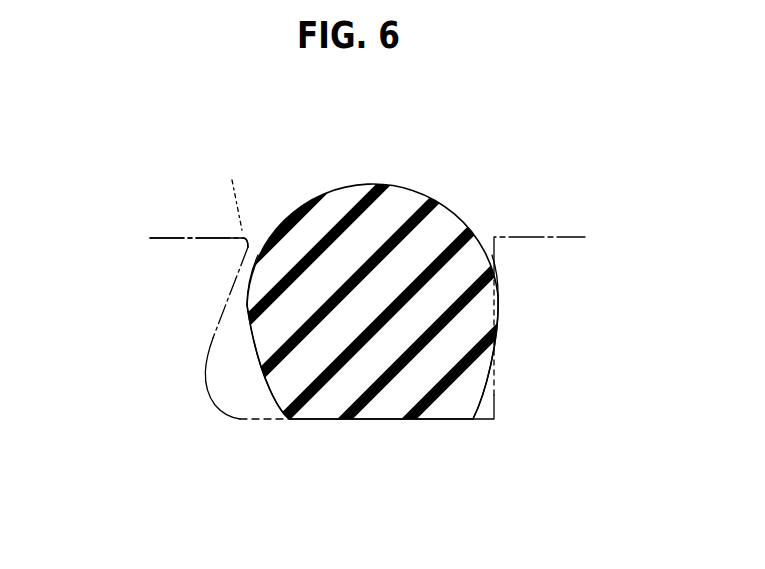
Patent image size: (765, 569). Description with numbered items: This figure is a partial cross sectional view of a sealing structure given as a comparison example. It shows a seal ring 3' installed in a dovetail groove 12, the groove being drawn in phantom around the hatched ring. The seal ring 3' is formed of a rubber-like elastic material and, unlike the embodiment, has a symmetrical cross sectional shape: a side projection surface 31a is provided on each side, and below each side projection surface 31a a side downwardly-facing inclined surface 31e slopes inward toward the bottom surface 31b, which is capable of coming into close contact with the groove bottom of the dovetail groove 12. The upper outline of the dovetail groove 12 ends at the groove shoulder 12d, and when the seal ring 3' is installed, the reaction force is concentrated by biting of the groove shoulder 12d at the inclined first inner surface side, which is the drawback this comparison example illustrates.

The seal ring 3' is at (380, 240).
The dovetail groove 12 is at (240, 407).
The groove shoulder 12d is at (243, 238).
The side projection surface 31a is at (245, 293).
The side downwardly-facing inclined surface 31e is at (262, 357).
The bottom surface 31b is at (378, 420).